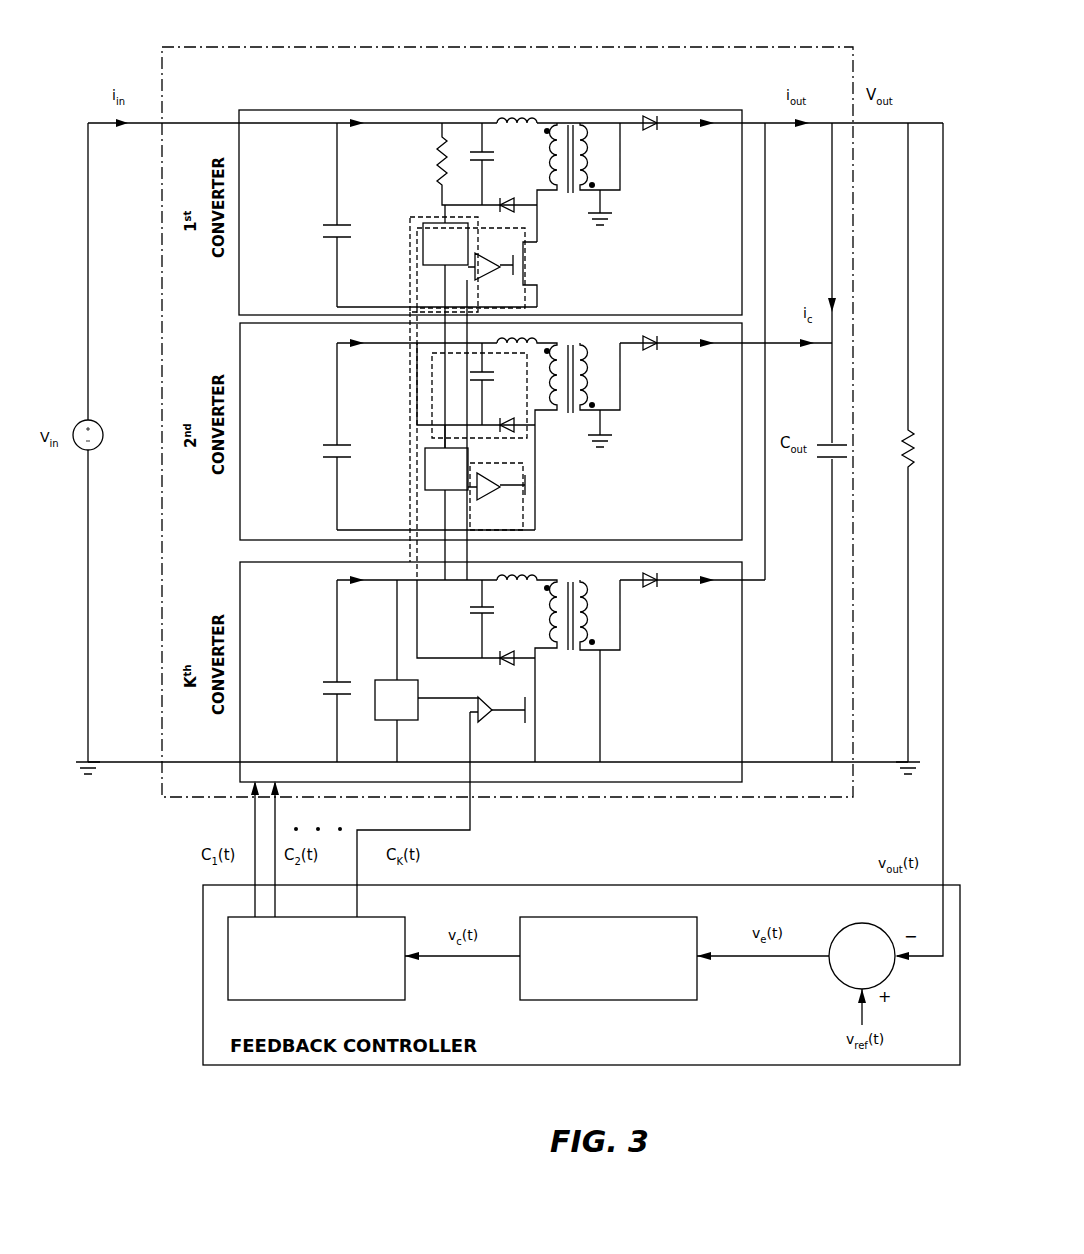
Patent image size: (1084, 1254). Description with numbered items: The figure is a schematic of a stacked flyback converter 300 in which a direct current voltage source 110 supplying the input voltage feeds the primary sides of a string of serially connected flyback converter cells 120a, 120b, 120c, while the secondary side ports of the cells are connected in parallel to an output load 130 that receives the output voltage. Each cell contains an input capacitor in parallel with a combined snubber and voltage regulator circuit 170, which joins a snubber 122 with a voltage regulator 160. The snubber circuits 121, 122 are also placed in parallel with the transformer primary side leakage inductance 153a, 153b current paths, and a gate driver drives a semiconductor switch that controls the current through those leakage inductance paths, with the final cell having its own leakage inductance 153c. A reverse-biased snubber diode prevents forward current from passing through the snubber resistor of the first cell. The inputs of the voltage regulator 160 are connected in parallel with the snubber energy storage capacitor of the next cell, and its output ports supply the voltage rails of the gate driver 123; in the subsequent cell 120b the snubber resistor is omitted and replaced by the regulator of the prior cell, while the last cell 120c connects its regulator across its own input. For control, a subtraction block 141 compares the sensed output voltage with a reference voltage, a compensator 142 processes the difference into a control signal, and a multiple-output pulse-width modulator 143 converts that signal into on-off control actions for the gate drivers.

The stacked flyback converter 300 is at (216, 86).
The direct current voltage source 110 is at (80, 414).
The first flyback converter cell 120a is at (513, 299).
The second flyback converter cell 120b is at (536, 418).
The final flyback converter cell 120c is at (530, 634).
The snubber circuit 121 is at (456, 122).
The snubber circuit 122 is at (460, 405).
The gate driver 123 is at (468, 508).
The output load 130 is at (902, 424).
The subtraction block 141 is at (862, 956).
The compensator 142 is at (608, 958).
The multiple-output pulse-width modulator 143 is at (316, 958).
The transformer primary side leakage inductance 153a is at (554, 147).
The transformer primary side leakage inductance 153b is at (524, 333).
The transformer primary side leakage inductance 153c is at (524, 571).
The voltage regulator 160 is at (441, 218).
The combined snubber and voltage regulator circuit 170 is at (402, 276).